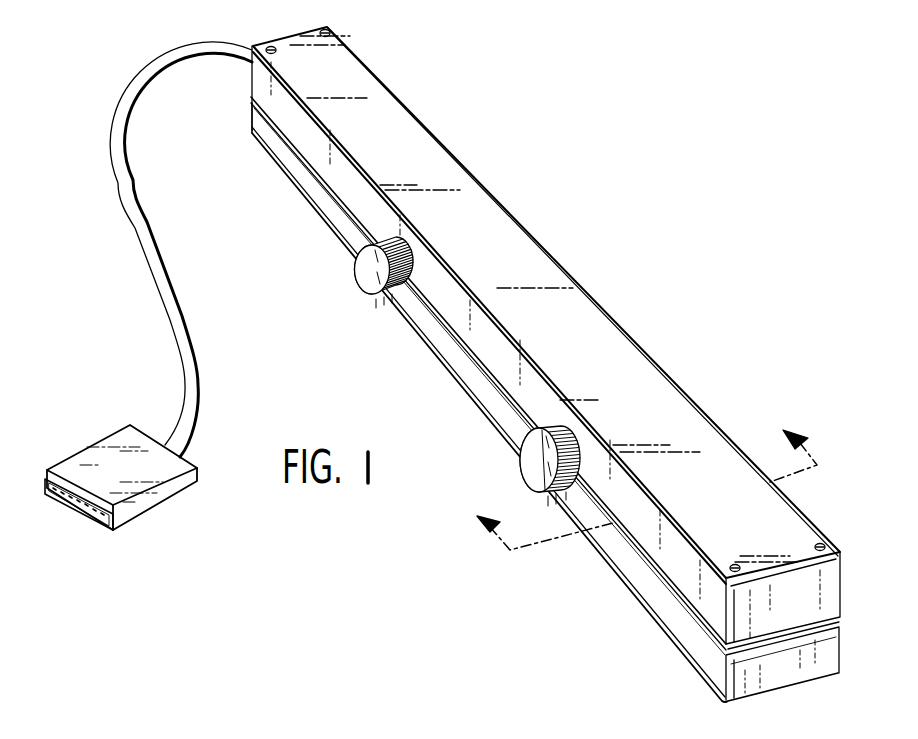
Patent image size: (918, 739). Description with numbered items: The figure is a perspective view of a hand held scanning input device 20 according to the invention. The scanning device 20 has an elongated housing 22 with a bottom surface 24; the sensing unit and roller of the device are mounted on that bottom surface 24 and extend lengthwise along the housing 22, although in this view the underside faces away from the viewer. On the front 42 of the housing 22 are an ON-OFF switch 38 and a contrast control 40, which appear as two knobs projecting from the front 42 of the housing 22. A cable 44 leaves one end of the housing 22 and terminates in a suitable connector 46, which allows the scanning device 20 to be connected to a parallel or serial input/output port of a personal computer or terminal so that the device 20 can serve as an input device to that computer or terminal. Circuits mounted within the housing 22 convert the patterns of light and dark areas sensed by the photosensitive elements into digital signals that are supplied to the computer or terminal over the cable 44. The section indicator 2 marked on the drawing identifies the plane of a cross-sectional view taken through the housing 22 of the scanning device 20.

The hand held scanning input device 20 is at (574, 224).
The housing 22 is at (653, 398).
The bottom surface 24 is at (775, 690).
The ON-OFF switch 38 is at (527, 465).
The contrast control 40 is at (367, 277).
The front 42 is at (508, 368).
The cable 44 is at (143, 93).
The connector 46 is at (98, 462).
The section line 2- 2 is at (639, 478).